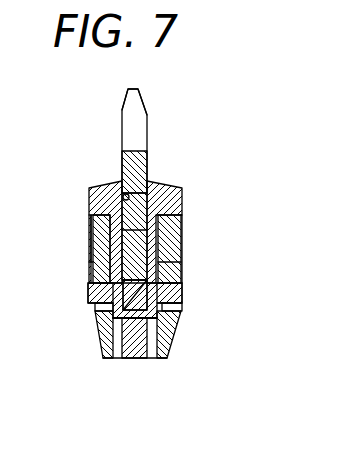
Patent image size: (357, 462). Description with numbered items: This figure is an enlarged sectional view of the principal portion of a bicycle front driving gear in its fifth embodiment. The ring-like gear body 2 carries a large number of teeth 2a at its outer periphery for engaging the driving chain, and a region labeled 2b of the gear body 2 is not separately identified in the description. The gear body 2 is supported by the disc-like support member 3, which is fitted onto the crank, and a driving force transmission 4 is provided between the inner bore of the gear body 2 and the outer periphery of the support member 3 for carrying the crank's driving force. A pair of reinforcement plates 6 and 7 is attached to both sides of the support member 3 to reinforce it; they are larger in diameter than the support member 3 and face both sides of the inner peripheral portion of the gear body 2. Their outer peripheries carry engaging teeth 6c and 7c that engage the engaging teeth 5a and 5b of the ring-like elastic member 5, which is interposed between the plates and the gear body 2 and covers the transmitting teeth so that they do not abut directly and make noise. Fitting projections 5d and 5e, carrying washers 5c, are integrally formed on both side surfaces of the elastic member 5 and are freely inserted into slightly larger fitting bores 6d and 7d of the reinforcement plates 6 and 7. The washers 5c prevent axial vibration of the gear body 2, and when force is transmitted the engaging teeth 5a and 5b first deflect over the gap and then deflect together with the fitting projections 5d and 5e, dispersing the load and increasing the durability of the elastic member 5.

The gear body 2 is at (149, 153).
The teeth 2a is at (142, 108).
The groove of contact pin 2b is at (120, 194).
The support member 3 is at (132, 358).
The driving force transmission 4 is at (113, 320).
The elastic member 5 is at (180, 186).
The engaging teeth 5a is at (93, 247).
The engaging teeth 5b is at (181, 245).
The washers 5c is at (100, 311).
The fitting projection 5d is at (90, 299).
The fitting projection 5e is at (180, 293).
The reinforcement plate 6 is at (97, 352).
The engaging teeth 6c is at (93, 220).
The fitting bore 6d is at (89, 285).
The reinforcement plate 7 is at (168, 355).
The engaging teeth 7c is at (182, 233).
The fitting bore 7d is at (182, 287).